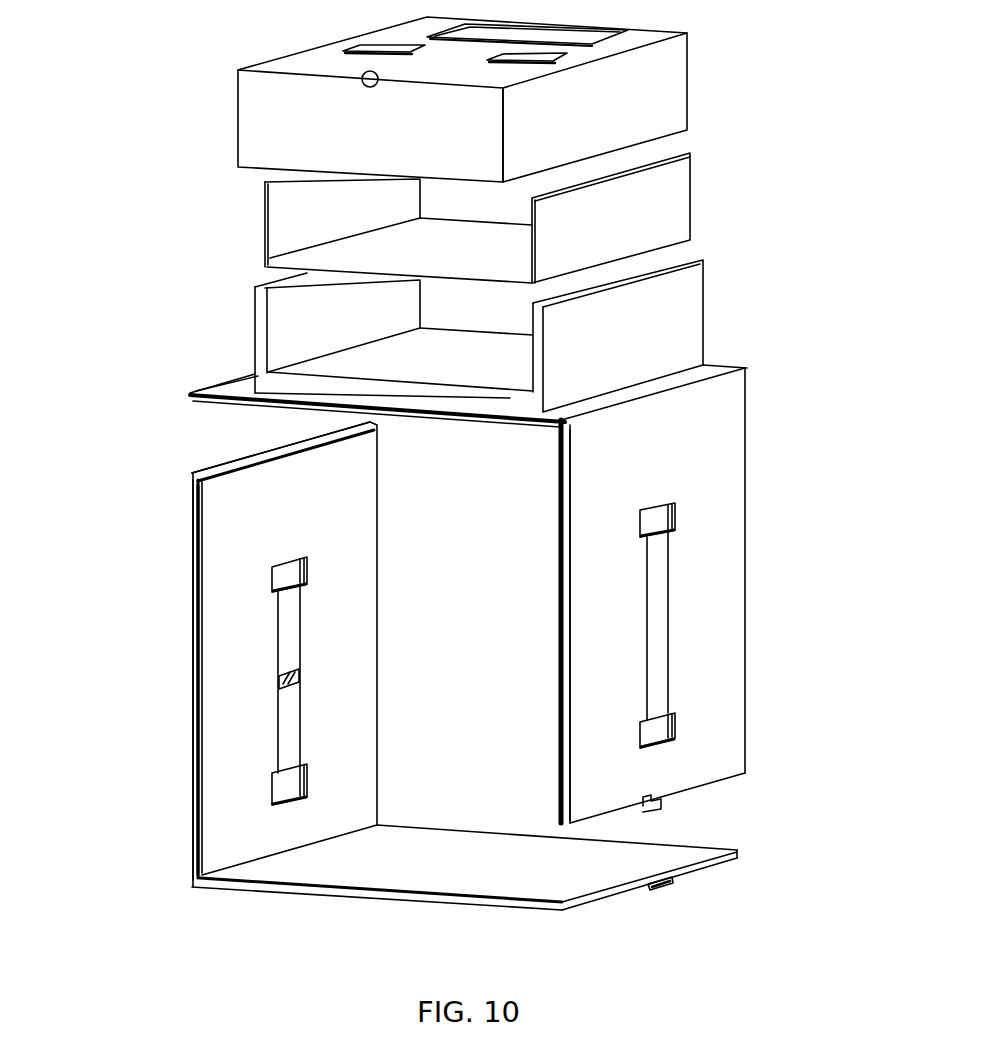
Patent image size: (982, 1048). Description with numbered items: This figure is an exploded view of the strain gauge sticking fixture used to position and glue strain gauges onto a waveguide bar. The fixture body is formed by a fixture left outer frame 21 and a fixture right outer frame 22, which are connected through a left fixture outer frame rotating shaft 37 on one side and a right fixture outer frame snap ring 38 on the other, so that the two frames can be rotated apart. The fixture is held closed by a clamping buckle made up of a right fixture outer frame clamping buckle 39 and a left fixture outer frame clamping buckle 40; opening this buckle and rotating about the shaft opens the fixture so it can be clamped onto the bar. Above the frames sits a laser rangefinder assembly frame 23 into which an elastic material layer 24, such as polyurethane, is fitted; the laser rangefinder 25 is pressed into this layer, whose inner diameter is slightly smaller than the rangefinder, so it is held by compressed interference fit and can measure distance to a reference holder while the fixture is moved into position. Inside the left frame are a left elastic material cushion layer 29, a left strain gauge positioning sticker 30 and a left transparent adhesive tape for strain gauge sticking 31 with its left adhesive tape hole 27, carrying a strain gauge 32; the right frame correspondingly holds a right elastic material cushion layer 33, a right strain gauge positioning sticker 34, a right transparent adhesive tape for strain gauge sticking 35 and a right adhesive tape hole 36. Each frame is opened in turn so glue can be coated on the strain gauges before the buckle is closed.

The fixture left outer frame 21 is at (193, 602).
The fixture right outer frame 22 is at (640, 440).
The laser rangefinder assembly frame 23 is at (602, 327).
The elastic material layer 24 is at (590, 224).
The laser rangefinder 25 is at (445, 116).
The left adhesive tape hole 27 is at (285, 790).
The left elastic material cushion layer 29 is at (193, 518).
The left strain gauge positioning sticker 30 is at (198, 553).
The left transparent adhesive tape for strain gauge sticking 31 is at (292, 651).
The strain gauge 32 is at (280, 686).
The right elastic material cushion layer 33 is at (570, 490).
The right strain gauge positioning sticker 34 is at (561, 550).
The right transparent adhesive tape for strain gauge sticking 35 is at (655, 663).
The right adhesive tape hole 36 is at (650, 728).
The left fixture outer frame rotating shaft 37 is at (192, 472).
The right fixture outer frame snap ring 38 is at (190, 394).
The right fixture outer frame clamping buckle 39 is at (665, 798).
The left fixture outer frame clamping buckle 40 is at (672, 880).